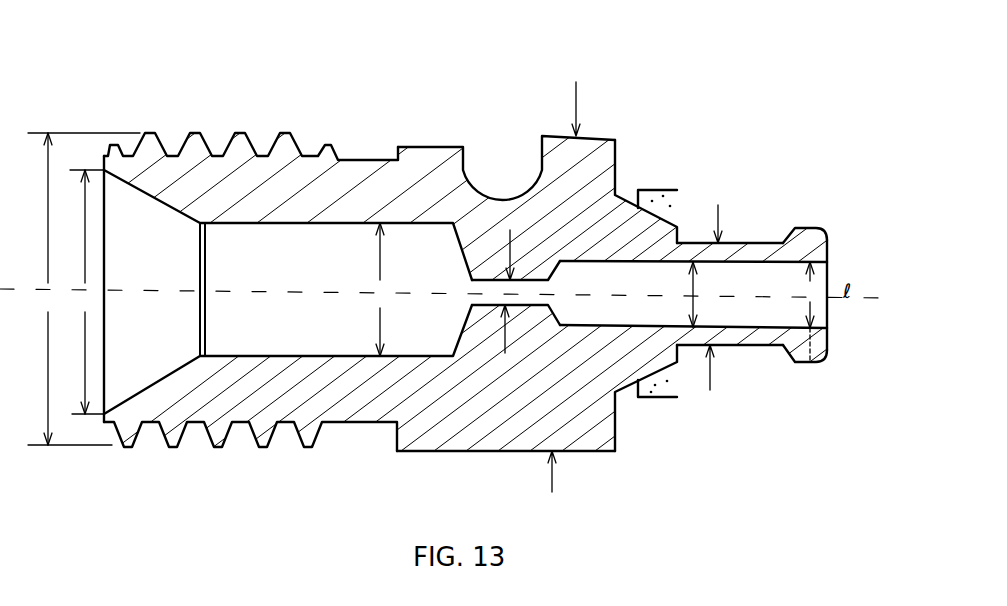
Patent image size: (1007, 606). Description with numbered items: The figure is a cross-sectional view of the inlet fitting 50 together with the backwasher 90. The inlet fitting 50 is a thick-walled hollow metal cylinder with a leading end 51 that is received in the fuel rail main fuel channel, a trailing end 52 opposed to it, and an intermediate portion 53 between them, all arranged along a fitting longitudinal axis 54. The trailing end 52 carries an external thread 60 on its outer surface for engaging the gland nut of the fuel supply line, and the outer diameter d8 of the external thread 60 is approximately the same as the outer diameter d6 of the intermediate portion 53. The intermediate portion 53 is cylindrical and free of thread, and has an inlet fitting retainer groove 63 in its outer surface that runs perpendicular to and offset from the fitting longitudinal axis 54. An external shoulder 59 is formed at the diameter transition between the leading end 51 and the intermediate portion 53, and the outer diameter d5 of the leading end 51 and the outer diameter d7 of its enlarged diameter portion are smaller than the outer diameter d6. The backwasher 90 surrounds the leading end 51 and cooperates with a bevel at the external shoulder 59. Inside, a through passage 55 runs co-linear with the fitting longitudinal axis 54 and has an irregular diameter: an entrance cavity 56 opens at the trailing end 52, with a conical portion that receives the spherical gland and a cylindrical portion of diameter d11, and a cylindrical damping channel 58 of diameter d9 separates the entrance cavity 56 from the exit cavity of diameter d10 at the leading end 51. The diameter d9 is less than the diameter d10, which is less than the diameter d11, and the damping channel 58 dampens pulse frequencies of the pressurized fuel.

The inlet fitting 50 is at (270, 66).
The trailing end 52 is at (112, 434).
The external thread 60 is at (300, 142).
The through passage 55 is at (352, 237).
The entrance cavity 56 is at (153, 251).
The damping channel 58 is at (633, 289).
The intermediate portion 53 is at (475, 438).
The inlet fitting retainer groove 63 is at (530, 187).
The external shoulder 59 is at (618, 432).
The backwasher 90 is at (661, 192).
The leading end 51 is at (745, 348).
The fitting longitudinal axis 54 is at (857, 295).
The outer diameter of the leading end d5 is at (718, 205).
The outer diameter of the intermediate portion d6 is at (578, 101).
The outer diameter of the enlarged diameter portion d7 is at (802, 312).
The outer diameter of the external thread d8 is at (84, 289).
The diameter of the damping channel d9 is at (514, 236).
The diameter of the exit cavity d10 is at (722, 290).
The diameter of the entrance cavity cylindrical portion d11 is at (386, 289).